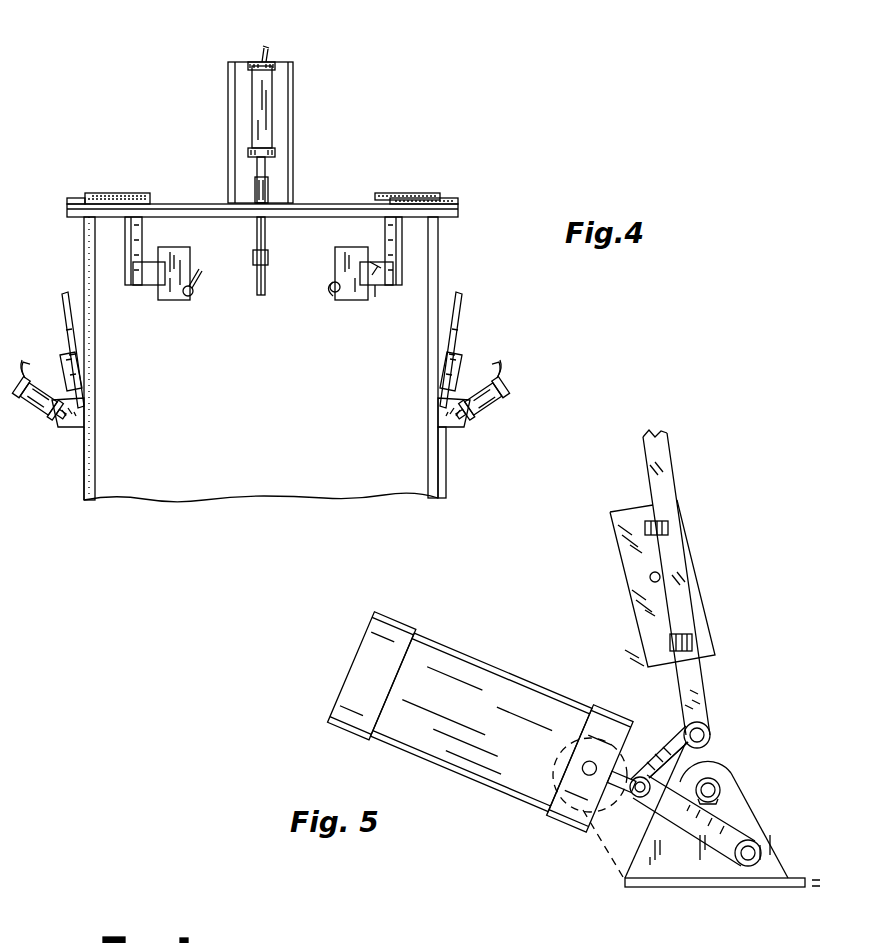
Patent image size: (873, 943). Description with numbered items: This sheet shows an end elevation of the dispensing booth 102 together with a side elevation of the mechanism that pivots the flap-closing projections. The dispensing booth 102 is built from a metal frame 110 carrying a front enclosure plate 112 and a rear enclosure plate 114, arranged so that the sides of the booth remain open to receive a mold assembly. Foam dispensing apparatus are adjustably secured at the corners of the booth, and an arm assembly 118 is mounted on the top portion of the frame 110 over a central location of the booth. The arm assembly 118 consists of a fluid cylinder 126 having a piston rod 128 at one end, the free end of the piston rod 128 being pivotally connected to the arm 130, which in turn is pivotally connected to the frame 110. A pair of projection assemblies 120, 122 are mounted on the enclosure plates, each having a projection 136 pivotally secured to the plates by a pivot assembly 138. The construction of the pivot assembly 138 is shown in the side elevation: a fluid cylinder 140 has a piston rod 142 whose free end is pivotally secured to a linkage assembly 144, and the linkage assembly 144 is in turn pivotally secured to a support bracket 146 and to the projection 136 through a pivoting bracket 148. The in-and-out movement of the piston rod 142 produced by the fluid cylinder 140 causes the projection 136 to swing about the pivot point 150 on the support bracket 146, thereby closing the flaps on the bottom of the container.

In FIG. 4, the dispensing booth 102 is at (442, 262).
In FIG. 4, the metal frame 110 is at (87, 241).
In FIG. 4, the front enclosure plate 112 is at (83, 495).
In FIG. 4, the rear enclosure plate 114 is at (446, 478).
In FIG. 4, the arm assembly 118 is at (292, 88).
In FIG. 4, the projection assembly 120 is at (66, 340).
In FIG. 4, the projection assembly 122 is at (457, 345).
In FIG. 4, the fluid cylinder 126 is at (262, 125).
In FIG. 4, the piston rod 128 is at (267, 168).
In FIG. 4, the arm 130 is at (266, 291).
In FIG. 5, the projection 136 is at (672, 505).
In FIG. 5, the pivot assembly 138 is at (562, 689).
In FIG. 5, the fluid cylinder 140 is at (480, 688).
In FIG. 5, the piston rod 142 is at (625, 767).
In FIG. 5, the linkage assembly 144 is at (657, 768).
In FIG. 5, the support bracket 146 is at (683, 868).
In FIG. 5, the pivoting bracket 148 is at (628, 542).
In FIG. 5, the pivot point 150 is at (713, 780).